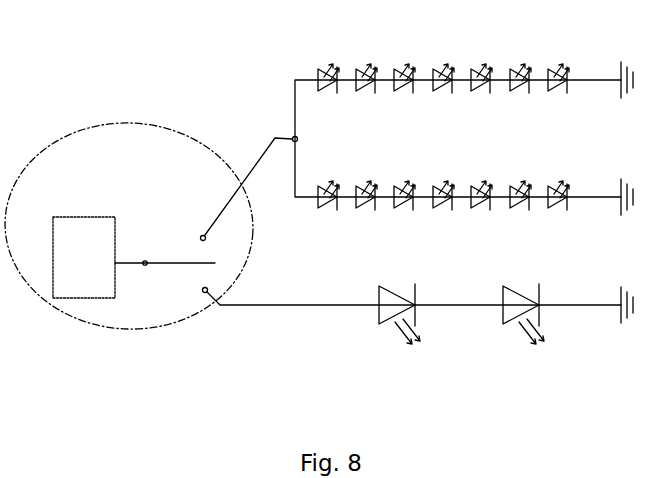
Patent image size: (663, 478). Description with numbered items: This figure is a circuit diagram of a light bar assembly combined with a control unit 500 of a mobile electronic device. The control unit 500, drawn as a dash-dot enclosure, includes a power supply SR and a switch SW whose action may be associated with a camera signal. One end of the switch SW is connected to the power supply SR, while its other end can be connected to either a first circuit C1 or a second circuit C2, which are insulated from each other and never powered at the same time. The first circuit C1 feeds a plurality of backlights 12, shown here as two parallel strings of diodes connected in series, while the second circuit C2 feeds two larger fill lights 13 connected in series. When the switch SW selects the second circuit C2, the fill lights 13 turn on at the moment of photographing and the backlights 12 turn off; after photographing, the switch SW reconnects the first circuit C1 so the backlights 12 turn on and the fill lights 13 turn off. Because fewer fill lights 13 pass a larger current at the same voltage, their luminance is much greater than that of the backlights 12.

The control unit 500 is at (100, 147).
The power supply SR is at (58, 215).
The switch SW is at (180, 242).
The first circuit C1 is at (288, 100).
The second circuit C2 is at (277, 310).
The backlights 12 is at (327, 62).
The fill light 13 is at (375, 328).